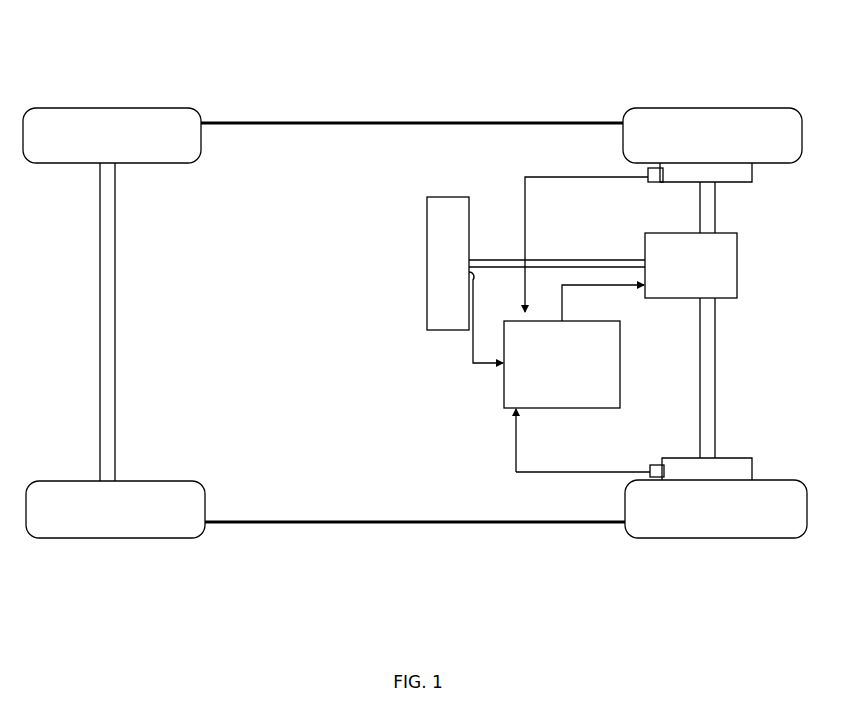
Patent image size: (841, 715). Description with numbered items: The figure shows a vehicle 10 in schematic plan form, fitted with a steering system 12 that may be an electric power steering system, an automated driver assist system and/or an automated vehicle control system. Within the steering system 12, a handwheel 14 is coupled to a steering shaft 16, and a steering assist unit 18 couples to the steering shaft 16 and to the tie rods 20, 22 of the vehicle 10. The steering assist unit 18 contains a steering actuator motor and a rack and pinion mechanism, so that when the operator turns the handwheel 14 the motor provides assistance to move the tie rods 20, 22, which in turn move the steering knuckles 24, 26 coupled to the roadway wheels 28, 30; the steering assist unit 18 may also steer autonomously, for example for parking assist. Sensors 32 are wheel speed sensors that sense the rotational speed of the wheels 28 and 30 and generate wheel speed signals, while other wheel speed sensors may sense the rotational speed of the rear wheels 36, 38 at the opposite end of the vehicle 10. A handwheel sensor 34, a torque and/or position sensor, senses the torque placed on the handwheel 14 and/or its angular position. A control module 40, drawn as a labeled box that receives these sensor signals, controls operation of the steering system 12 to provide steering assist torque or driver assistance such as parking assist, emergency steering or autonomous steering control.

The vehicle 10 is at (447, 44).
The steering system 12 is at (531, 158).
The handwheel 14 is at (447, 197).
The steering shaft 16 is at (533, 259).
The steering assist unit 18 is at (737, 258).
The tie rod 20 is at (715, 218).
The tie rod 22 is at (715, 355).
The steering knuckle 24 is at (748, 163).
The steering knuckle 26 is at (686, 458).
The roadway wheel 28 is at (743, 108).
The roadway wheel 30 is at (752, 480).
The wheel speed sensor 32 is at (653, 182).
The handwheel sensor 34 is at (477, 282).
The rear wheel 36 is at (167, 108).
The rear left wheel 38 is at (163, 481).
The control module 40 is at (578, 321).